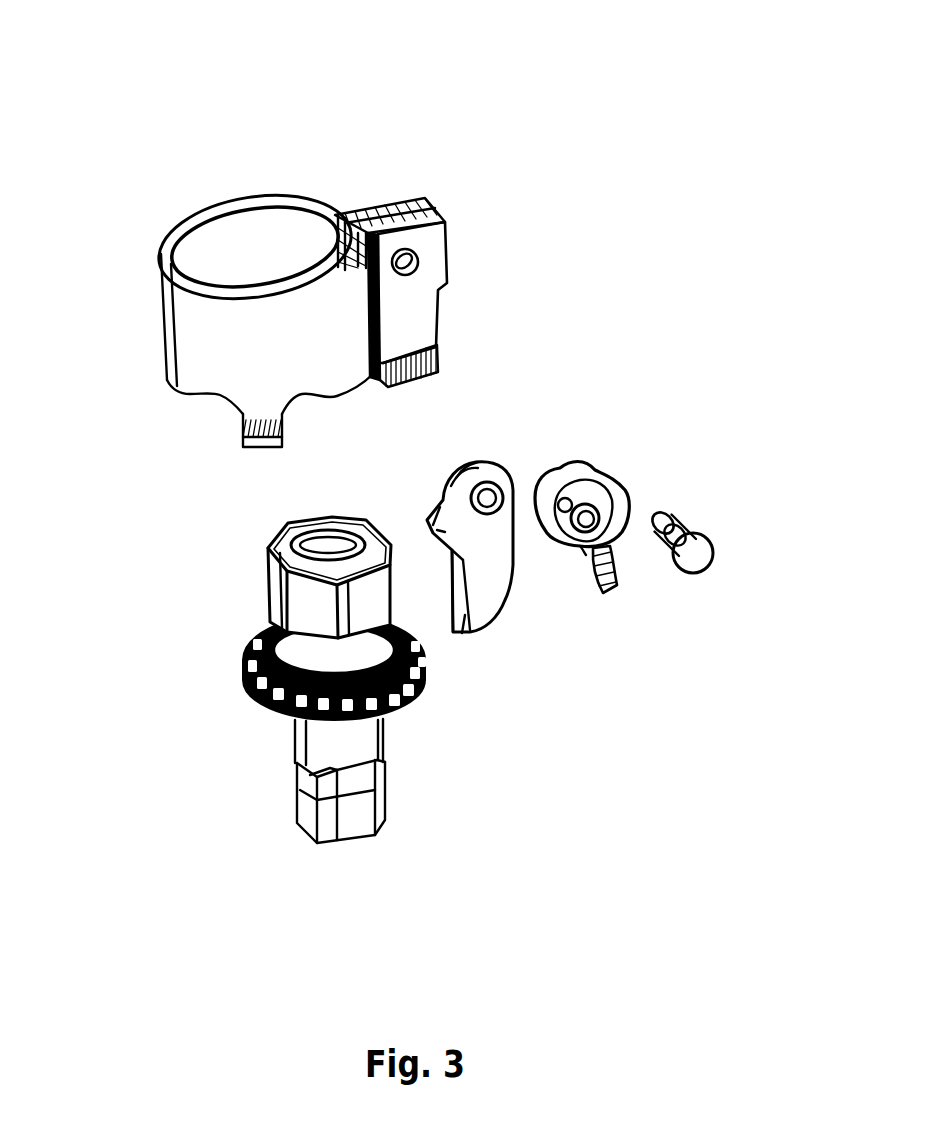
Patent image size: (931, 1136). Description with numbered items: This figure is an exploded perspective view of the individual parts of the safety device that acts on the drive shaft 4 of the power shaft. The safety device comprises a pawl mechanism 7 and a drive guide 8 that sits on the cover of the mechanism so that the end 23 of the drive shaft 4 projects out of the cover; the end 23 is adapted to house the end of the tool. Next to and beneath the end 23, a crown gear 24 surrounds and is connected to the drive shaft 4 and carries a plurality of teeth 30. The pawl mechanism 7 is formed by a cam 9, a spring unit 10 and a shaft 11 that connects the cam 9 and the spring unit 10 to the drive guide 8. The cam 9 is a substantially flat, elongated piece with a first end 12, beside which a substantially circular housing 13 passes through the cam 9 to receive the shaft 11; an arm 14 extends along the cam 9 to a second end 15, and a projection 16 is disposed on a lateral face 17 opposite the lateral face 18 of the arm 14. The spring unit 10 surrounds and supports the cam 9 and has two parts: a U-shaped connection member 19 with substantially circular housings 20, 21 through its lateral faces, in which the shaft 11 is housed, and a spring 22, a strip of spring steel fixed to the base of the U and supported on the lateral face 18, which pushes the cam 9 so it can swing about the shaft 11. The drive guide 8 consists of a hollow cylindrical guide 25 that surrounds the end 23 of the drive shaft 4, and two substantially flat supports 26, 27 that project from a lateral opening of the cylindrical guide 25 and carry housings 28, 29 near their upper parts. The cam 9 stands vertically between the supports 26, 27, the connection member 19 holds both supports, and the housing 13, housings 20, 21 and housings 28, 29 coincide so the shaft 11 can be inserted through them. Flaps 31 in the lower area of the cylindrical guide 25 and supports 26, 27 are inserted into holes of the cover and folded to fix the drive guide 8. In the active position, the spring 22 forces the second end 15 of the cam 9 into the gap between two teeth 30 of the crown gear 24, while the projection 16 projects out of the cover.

The drive shaft 4 is at (198, 784).
The pawl mechanism 7 is at (627, 835).
The drive guide 8 is at (252, 110).
The cam 9 is at (495, 734).
The spring unit 10 is at (622, 366).
The shaft 11 is at (700, 563).
The first end 12 is at (471, 483).
The housing 13 is at (490, 483).
The arm 14 is at (487, 572).
The second end 15 is at (473, 632).
The projection 16 is at (428, 517).
The lateral face 17 is at (453, 633).
The lateral face 18 is at (507, 550).
The U-shaped connection member 19 is at (630, 512).
The housing 20 is at (571, 472).
The housing 21 is at (615, 470).
The spring 22 is at (615, 572).
The end 23 is at (277, 588).
The crown gear 24 is at (222, 658).
The cylindrical guide 25 is at (216, 191).
The support 26 is at (403, 190).
The support 27 is at (472, 232).
The housing 28 is at (360, 200).
The housing 29 is at (418, 263).
The teeth 30 is at (246, 690).
The flaps 31 is at (244, 440).